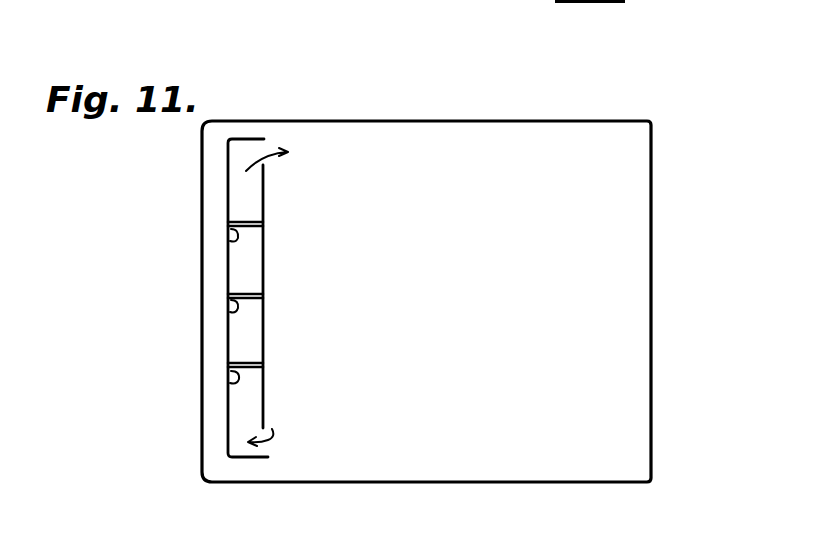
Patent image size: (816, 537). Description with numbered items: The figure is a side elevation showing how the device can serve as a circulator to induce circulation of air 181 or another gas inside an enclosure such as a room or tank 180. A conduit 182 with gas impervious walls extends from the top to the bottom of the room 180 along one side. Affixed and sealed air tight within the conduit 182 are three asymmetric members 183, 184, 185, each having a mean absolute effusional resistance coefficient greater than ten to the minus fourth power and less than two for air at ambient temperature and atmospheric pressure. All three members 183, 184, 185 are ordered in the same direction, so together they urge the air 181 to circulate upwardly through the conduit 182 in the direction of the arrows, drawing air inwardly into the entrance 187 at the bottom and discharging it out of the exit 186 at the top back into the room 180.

The room 180 is at (651, 246).
The air 181 is at (460, 323).
The conduit 182 is at (228, 186).
The asymmetric member 183 is at (230, 241).
The asymmetric member 184 is at (230, 312).
The asymmetric member 185 is at (230, 383).
The exit 186 is at (270, 141).
The entrance 187 is at (270, 448).